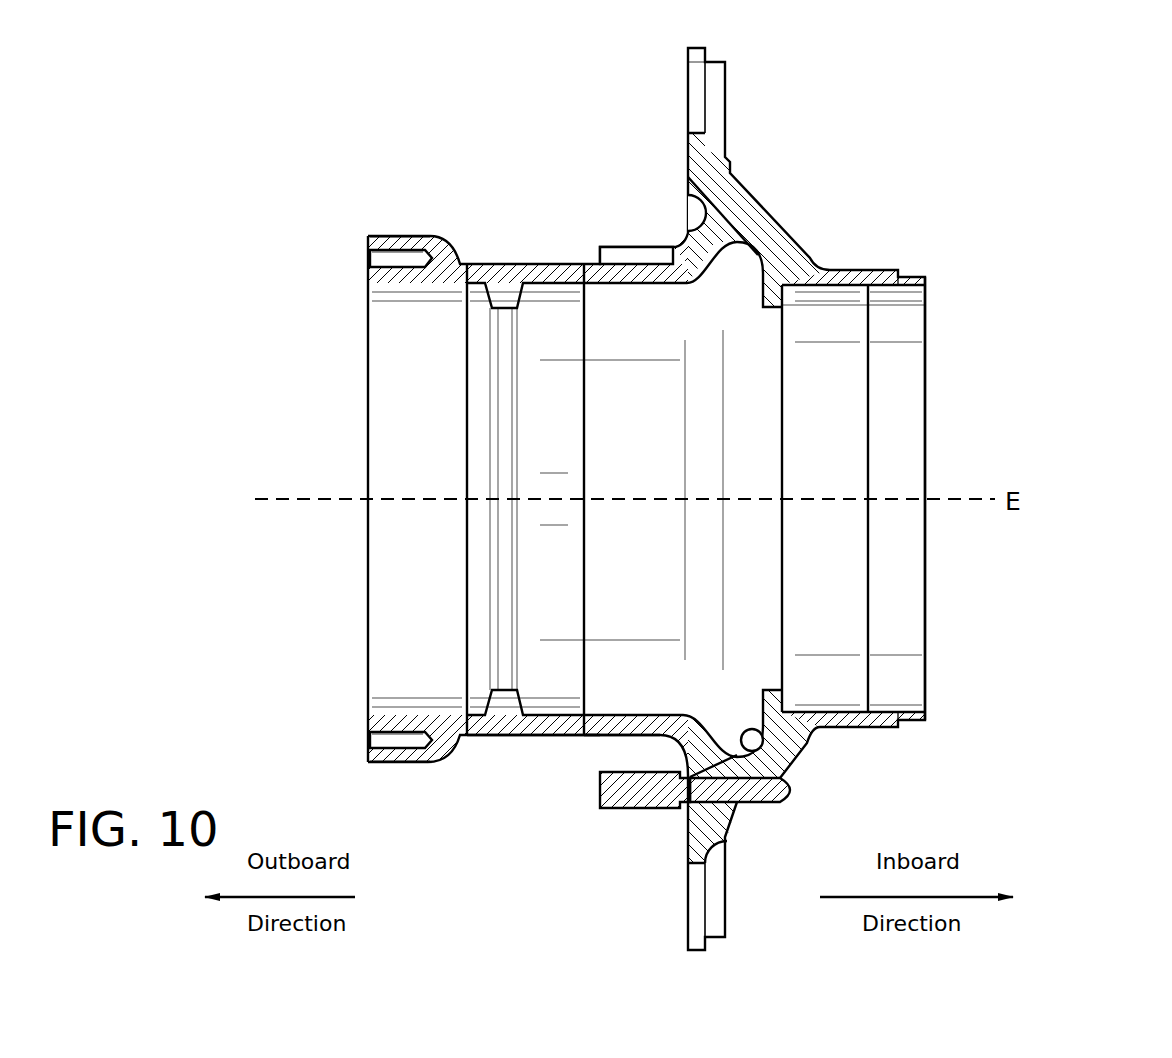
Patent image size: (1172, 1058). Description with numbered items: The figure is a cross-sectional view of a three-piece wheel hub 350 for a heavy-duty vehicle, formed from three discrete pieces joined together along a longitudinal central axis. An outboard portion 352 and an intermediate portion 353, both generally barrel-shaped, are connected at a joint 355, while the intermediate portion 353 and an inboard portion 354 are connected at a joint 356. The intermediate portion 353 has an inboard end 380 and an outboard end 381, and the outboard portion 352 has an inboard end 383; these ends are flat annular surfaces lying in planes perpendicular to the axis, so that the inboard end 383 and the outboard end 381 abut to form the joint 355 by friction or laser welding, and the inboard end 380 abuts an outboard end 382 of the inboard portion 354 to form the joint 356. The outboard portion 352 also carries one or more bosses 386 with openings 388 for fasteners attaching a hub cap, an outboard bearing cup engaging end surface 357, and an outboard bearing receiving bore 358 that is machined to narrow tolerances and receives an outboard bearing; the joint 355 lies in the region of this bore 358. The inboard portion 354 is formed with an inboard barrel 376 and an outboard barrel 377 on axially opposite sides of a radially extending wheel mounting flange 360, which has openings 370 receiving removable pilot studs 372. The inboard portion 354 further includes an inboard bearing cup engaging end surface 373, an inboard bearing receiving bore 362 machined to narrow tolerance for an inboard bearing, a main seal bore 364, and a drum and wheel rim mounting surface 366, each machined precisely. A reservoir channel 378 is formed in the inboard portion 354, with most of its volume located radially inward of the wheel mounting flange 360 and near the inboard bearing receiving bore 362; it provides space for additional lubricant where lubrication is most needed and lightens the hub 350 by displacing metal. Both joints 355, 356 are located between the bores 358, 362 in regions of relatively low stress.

The wheel hub 350 is at (1082, 162).
The outboard portion 352 is at (362, 766).
The intermediate portion 353 is at (505, 742).
The inboard portion 354 is at (936, 754).
The joint 355 is at (465, 580).
The joint 356 is at (584, 433).
The outboard bearing cup engaging end surface 357 is at (485, 302).
The outboard bearing receiving bore 358 is at (390, 713).
The wheel mounting flange 360 is at (736, 172).
The inboard bearing receiving bore 362 is at (830, 712).
The main seal bore 364 is at (892, 712).
The drum and wheel rim mounting surface 366 is at (688, 150).
The openings 370 is at (785, 800).
The removable pilot studs 372 is at (643, 808).
The inboard bearing cup engaging end surface 373 is at (782, 307).
The inboard barrel 376 is at (853, 265).
The outboard barrel 377 is at (605, 742).
The reservoir channel 378 is at (803, 747).
The inboard end 380 is at (584, 607).
The outboard end 381 is at (467, 395).
The outboard end 382 is at (585, 620).
The inboard end 383 is at (465, 381).
The bosses 386 is at (405, 237).
The openings 388 is at (367, 256).